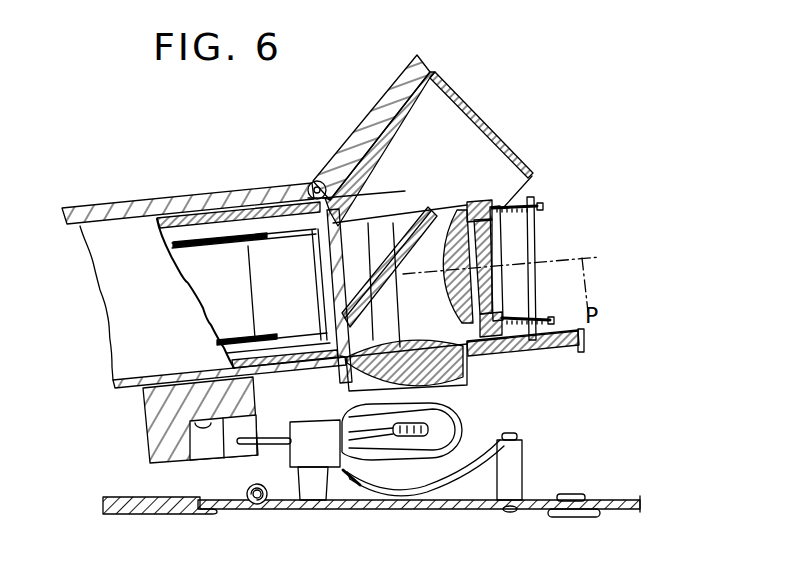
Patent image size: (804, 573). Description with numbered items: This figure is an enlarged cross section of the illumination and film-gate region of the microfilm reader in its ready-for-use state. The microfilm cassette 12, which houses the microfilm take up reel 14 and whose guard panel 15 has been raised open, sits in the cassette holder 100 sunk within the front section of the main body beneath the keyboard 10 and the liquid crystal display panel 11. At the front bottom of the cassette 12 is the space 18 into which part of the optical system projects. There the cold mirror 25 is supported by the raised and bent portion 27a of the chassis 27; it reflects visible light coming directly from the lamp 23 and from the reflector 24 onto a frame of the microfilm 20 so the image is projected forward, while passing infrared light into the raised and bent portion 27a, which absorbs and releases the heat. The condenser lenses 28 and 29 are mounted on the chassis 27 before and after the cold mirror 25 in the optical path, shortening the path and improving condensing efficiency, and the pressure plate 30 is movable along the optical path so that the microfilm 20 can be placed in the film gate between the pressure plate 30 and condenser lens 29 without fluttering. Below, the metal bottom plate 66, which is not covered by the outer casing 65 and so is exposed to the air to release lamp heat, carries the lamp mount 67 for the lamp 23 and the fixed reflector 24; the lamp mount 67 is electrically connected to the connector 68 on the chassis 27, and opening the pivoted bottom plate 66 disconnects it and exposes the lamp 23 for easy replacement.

The keyboard 10 is at (118, 203).
The liquid crystal display panel 11 is at (383, 103).
The microfilm cassette 12 is at (197, 217).
The microfilm take up reel 14 is at (234, 238).
The guard panel 15 is at (463, 112).
The space 18 is at (318, 182).
The microfilm 20 is at (298, 299).
The lamp 23 is at (462, 421).
The reflector 24 is at (418, 493).
The cold mirror 25 is at (400, 350).
The chassis 27 is at (537, 348).
The raised and bent portion 27a is at (403, 230).
The condenser lens 28 is at (468, 372).
The condenser lens 29 is at (447, 297).
The pressure plate 30 is at (485, 236).
The outer casing 65 is at (150, 516).
The bottom plate 66 is at (357, 512).
The lamp mount 67 is at (318, 422).
The connector 68 is at (157, 437).
The cassette holder 100 is at (115, 344).